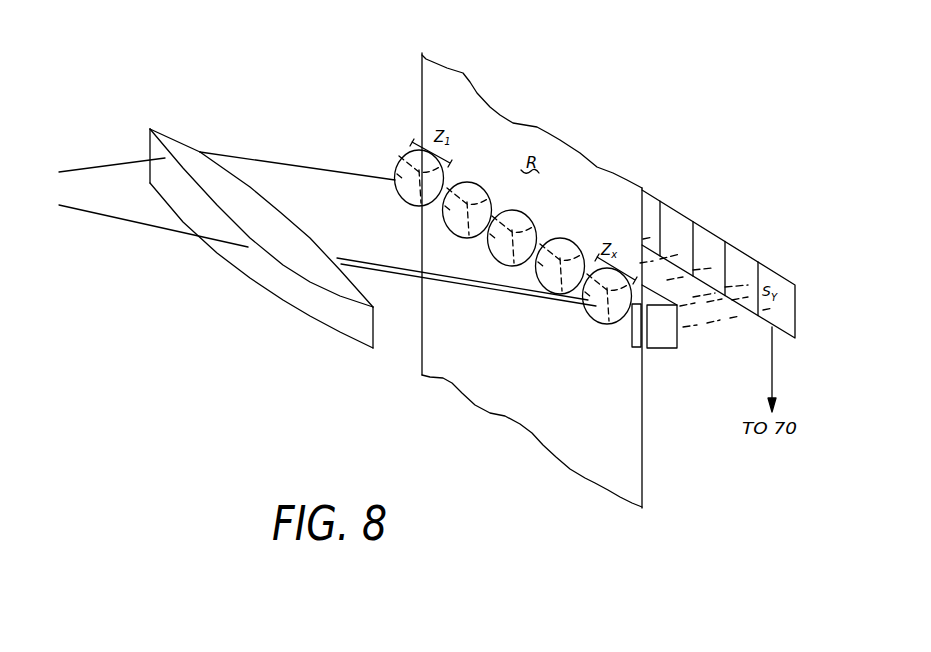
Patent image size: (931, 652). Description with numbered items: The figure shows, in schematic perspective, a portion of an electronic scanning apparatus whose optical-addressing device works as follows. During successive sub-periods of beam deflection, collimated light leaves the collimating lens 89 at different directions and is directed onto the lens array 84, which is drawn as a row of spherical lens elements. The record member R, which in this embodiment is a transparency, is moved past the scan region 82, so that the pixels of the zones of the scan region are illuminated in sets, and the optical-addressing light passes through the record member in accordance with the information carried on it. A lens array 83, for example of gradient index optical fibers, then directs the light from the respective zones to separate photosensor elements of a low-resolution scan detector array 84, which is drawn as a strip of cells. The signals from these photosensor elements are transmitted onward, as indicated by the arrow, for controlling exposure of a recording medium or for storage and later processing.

The collimating lens 89 is at (180, 158).
The lens array 84 is at (398, 158).
The scan region 82 is at (624, 331).
The lens array 83 is at (667, 340).